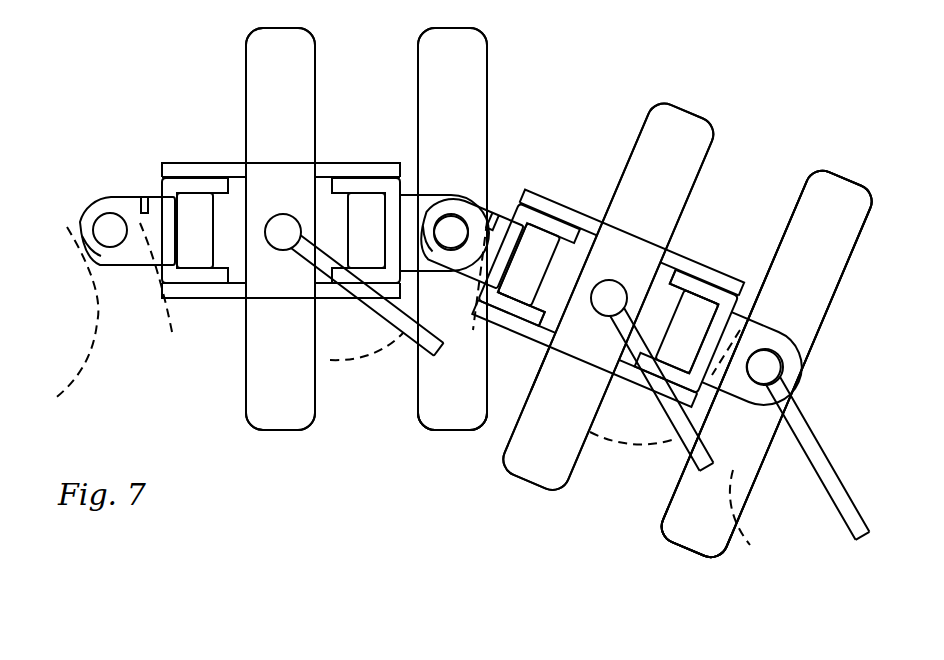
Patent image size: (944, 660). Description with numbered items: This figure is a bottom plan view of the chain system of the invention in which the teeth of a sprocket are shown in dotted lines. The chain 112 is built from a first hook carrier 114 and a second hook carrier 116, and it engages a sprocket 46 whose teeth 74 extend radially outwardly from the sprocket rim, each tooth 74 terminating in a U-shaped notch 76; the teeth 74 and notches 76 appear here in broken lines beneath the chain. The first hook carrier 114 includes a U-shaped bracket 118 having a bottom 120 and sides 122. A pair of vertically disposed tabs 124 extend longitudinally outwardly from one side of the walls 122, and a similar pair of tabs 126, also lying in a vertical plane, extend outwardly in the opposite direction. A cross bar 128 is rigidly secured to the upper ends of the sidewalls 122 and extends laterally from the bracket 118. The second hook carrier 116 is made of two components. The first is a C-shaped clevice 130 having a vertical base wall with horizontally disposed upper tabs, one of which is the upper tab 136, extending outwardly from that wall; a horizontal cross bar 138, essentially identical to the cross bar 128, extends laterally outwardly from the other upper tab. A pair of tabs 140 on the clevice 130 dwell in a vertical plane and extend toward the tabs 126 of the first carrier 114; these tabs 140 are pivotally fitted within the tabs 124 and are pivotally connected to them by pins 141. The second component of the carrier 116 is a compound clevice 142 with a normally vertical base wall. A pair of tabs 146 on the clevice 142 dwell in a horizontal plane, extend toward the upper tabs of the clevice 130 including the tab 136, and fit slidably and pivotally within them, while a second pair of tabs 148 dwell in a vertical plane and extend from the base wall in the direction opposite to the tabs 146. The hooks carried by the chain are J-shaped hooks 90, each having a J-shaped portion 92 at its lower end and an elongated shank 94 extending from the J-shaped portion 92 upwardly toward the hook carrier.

The sprocket 46 is at (96, 325).
The teeth 74 is at (167, 219).
The U-shaped notch 76 is at (80, 204).
The J-shaped hook 90 is at (410, 336).
The J-shaped portion 92 is at (428, 358).
The elongated shank 94 is at (283, 218).
The chain 112 is at (743, 55).
The first hook carrier 114 is at (247, 89).
The second hook carrier 116 is at (761, 312).
The U-shaped bracket 118 is at (268, 318).
The bottom 120 is at (265, 289).
The sides 122 is at (229, 163).
The tabs 124 is at (170, 163).
The tabs 126 is at (350, 176).
The cross bar 128 is at (257, 392).
The C-shaped clevice 130 is at (421, 431).
The upper tab 136 is at (425, 196).
The cross bar 138 is at (443, 421).
The tabs 140 is at (367, 227).
The pins 141 is at (188, 284).
The compound clevice 142 is at (100, 280).
The tabs 146 is at (102, 197).
The tabs 148 is at (200, 187).